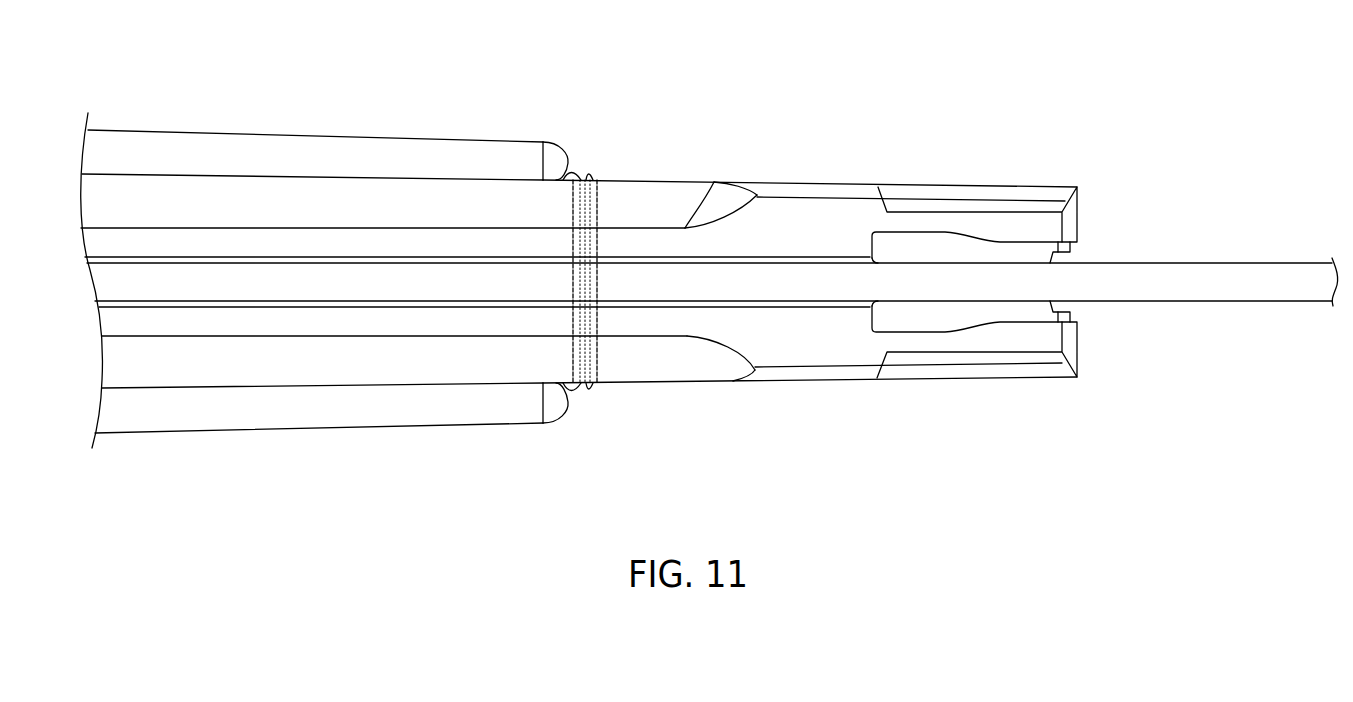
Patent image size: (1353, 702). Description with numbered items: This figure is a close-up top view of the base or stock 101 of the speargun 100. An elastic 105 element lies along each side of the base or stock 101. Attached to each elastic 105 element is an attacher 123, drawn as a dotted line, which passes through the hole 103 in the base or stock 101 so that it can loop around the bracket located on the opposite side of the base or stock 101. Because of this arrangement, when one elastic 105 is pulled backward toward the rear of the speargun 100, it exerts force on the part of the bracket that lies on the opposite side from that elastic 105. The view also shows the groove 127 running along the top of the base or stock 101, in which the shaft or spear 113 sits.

The speargun 100 is at (669, 66).
The elastic element 105 is at (470, 137).
The base or stock 101 is at (714, 182).
The groove 127 is at (810, 257).
The shaft or spear 113 is at (1195, 263).
The attacher 123 is at (591, 178).
The hole 103 is at (596, 386).